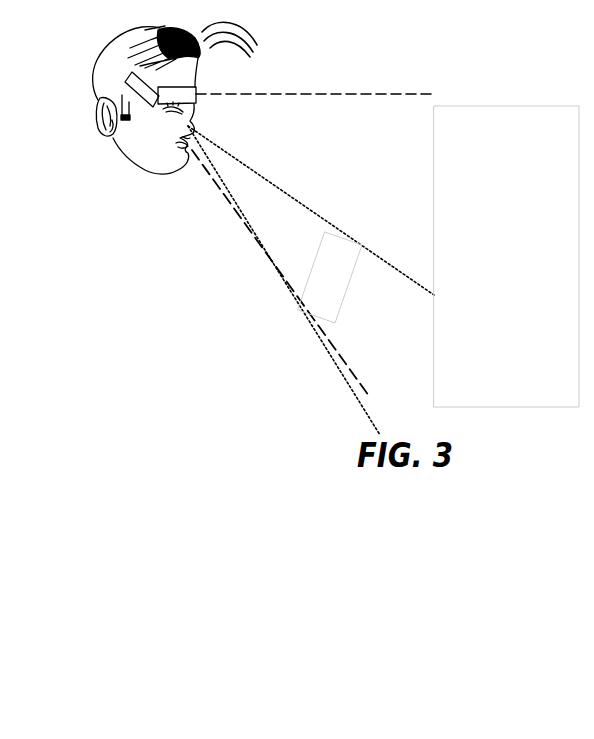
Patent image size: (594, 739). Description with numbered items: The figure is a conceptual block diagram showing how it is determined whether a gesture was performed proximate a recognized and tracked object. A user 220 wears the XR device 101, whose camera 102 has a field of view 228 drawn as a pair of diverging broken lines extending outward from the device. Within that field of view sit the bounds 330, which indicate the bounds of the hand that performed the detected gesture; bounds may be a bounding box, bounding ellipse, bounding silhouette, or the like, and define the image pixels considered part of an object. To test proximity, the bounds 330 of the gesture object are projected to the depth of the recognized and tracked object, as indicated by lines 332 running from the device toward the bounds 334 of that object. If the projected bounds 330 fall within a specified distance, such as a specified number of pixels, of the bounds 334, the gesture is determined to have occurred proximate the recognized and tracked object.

The user 220 is at (122, 52).
The XR device 101 is at (190, 93).
The camera 102 is at (103, 103).
The field of view 228 is at (335, 93).
The lines 332 is at (330, 220).
The bounds 330 is at (358, 243).
The bounds 334 is at (538, 106).